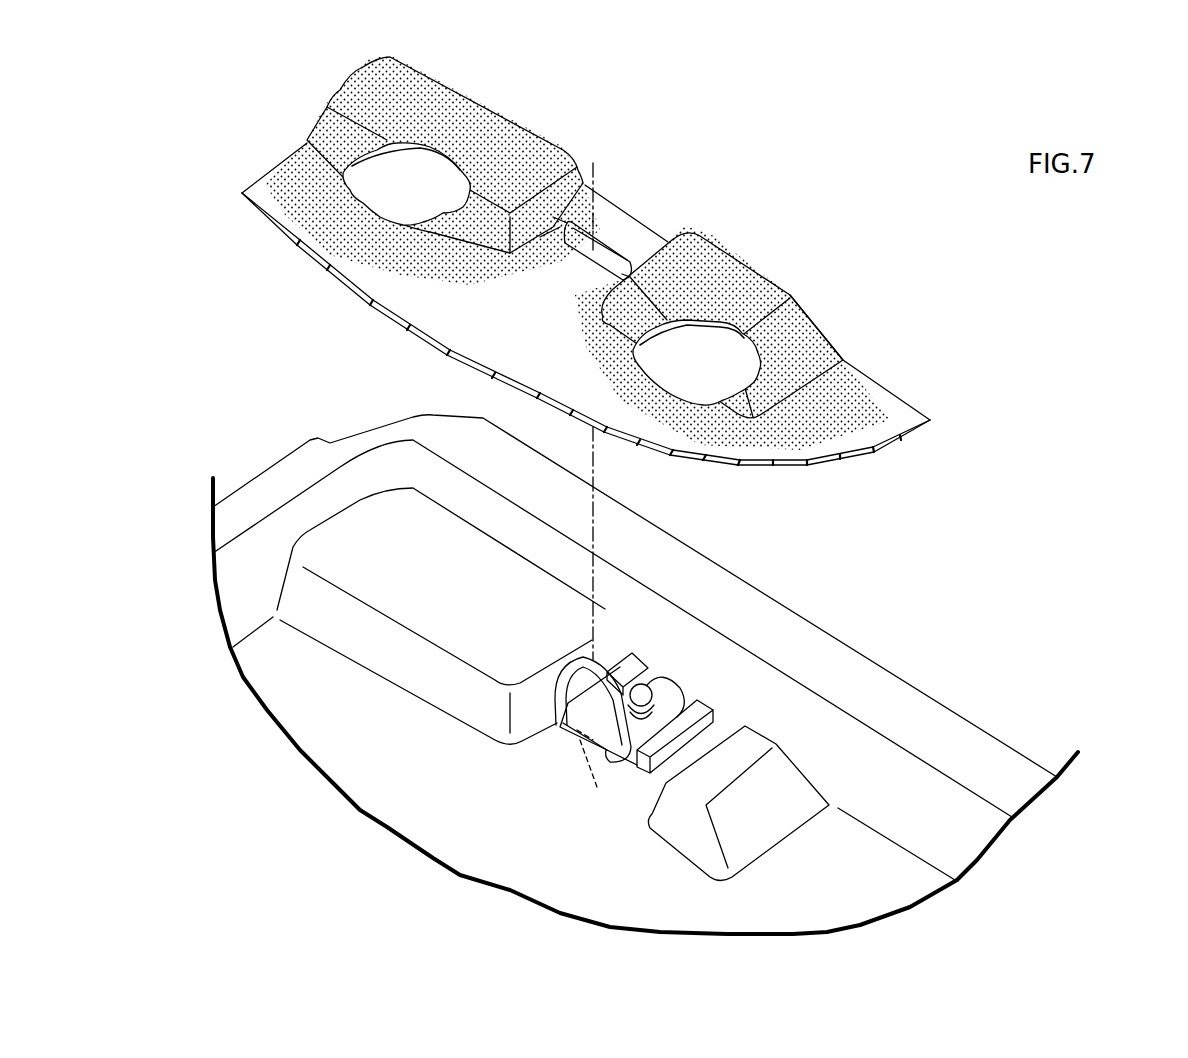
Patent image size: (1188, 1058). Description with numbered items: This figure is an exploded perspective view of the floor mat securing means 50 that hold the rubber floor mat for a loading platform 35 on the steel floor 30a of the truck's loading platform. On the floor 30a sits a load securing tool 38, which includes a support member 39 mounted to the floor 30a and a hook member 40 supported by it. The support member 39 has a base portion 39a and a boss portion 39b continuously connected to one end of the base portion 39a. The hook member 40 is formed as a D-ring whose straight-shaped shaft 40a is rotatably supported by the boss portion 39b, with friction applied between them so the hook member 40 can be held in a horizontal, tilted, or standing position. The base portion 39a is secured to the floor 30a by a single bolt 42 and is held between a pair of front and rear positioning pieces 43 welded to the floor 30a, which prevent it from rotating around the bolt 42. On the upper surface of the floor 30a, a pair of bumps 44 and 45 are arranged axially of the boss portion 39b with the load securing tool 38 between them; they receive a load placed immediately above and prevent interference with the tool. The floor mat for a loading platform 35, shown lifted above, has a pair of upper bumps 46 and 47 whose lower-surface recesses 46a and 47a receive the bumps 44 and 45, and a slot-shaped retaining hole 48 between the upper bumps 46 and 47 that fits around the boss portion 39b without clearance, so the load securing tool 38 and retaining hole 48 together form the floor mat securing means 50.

The floor 30a is at (373, 780).
The floor mat for a loading platform 35 is at (570, 357).
The load securing tool 38 is at (635, 716).
The support member 39 is at (555, 741).
The base portion 39a is at (667, 712).
The boss portion 39b is at (557, 723).
The hook member 40 is at (569, 708).
The shaft 40a is at (599, 775).
The bolt 42 is at (643, 688).
The positioning piece 43 is at (632, 663).
The bump 44 is at (427, 600).
The bump 45 is at (770, 800).
The upper bump 46 is at (445, 155).
The recess 46a is at (433, 150).
The upper bump 47 is at (722, 317).
The recess 47a is at (712, 325).
The retaining hole 48 is at (607, 245).
The floor mat securing means 50 is at (625, 196).